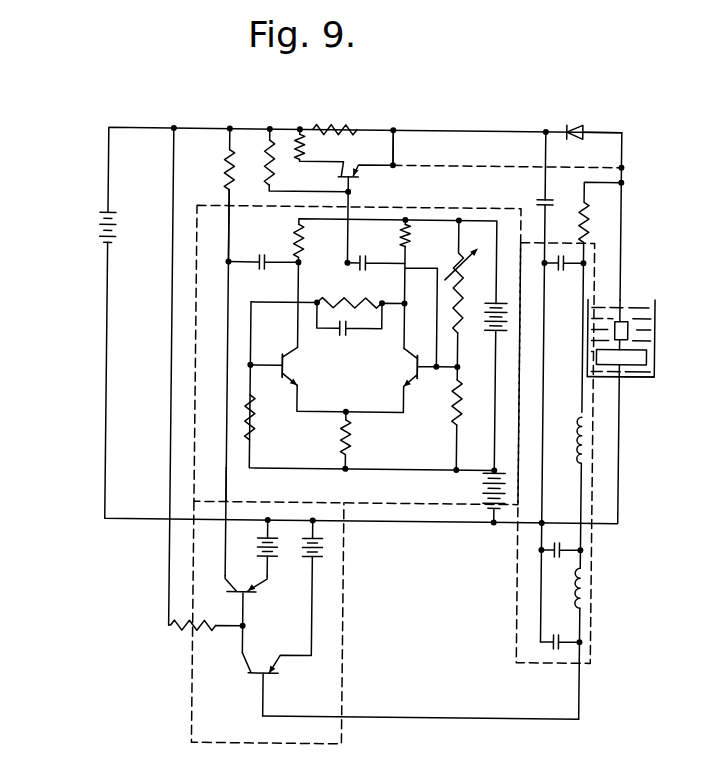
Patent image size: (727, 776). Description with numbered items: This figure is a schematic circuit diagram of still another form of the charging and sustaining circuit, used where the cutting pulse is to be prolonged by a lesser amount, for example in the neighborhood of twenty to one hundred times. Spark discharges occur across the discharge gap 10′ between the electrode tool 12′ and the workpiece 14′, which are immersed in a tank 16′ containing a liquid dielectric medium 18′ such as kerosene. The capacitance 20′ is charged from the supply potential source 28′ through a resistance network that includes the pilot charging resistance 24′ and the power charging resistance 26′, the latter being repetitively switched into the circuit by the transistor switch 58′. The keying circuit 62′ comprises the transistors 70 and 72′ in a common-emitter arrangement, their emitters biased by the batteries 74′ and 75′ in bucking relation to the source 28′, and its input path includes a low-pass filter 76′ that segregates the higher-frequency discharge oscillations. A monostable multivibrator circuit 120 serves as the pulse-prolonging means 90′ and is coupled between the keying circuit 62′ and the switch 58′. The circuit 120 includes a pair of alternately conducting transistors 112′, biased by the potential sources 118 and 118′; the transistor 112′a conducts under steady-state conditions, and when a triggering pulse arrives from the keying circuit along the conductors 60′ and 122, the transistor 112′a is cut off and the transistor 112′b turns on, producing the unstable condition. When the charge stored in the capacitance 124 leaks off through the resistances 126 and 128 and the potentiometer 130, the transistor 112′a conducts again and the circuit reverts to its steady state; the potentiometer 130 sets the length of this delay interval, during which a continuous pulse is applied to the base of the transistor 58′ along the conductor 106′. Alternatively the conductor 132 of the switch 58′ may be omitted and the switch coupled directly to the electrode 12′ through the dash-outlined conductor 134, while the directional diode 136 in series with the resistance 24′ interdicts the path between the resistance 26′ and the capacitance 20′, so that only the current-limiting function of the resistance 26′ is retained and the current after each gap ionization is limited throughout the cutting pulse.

The supply potential source 28′ is at (94, 233).
The monostable multivibrator circuit 120 is at (250, 232).
The power charging resistance 26′ is at (300, 130).
The pilot charging resistance 24′ is at (322, 125).
The transistor switch 58′ is at (348, 177).
The conductor 132 is at (395, 128).
The directional diode 136 is at (565, 122).
The alternative conductor 134 is at (505, 165).
The capacitance 20′ is at (543, 200).
The conductor 106′ is at (350, 193).
The pulse-prolonging means 90′ is at (418, 208).
The resistance 128 is at (327, 242).
The resistance 126 is at (376, 250).
The capacitance 124 is at (365, 296).
The conductor 122 is at (236, 268).
The potentiometer 130 is at (455, 272).
The biasing potential source 118 is at (500, 335).
The biasing potential source 118′ is at (488, 496).
The transistor 112′a is at (410, 363).
The transistor 112′b is at (298, 369).
The pair of alternately conducting transistors 112′ is at (412, 368).
The conductor 60′ is at (227, 481).
The keying circuit 62′ is at (345, 622).
The transistor 70 is at (262, 586).
The battery 75′ is at (272, 560).
The battery 74′ is at (322, 552).
The transistor 72′ is at (258, 660).
The low-pass filter 76′ is at (515, 572).
The liquid dielectric medium 18′ is at (637, 312).
The electrode tool 12′ is at (630, 330).
The discharge gap 10′ is at (628, 346).
The workpiece 14′ is at (648, 355).
The tank 16′ is at (655, 375).